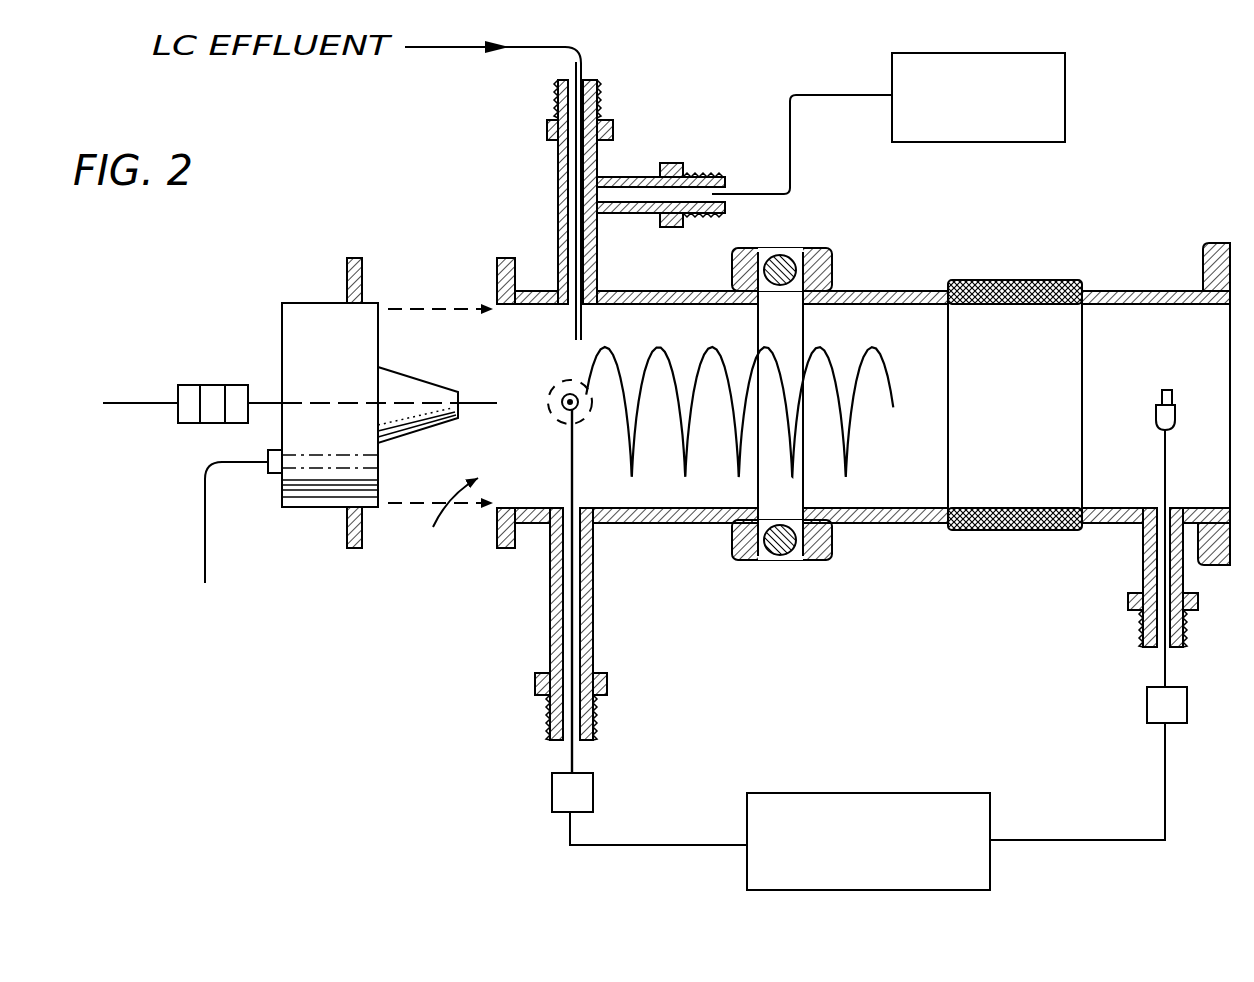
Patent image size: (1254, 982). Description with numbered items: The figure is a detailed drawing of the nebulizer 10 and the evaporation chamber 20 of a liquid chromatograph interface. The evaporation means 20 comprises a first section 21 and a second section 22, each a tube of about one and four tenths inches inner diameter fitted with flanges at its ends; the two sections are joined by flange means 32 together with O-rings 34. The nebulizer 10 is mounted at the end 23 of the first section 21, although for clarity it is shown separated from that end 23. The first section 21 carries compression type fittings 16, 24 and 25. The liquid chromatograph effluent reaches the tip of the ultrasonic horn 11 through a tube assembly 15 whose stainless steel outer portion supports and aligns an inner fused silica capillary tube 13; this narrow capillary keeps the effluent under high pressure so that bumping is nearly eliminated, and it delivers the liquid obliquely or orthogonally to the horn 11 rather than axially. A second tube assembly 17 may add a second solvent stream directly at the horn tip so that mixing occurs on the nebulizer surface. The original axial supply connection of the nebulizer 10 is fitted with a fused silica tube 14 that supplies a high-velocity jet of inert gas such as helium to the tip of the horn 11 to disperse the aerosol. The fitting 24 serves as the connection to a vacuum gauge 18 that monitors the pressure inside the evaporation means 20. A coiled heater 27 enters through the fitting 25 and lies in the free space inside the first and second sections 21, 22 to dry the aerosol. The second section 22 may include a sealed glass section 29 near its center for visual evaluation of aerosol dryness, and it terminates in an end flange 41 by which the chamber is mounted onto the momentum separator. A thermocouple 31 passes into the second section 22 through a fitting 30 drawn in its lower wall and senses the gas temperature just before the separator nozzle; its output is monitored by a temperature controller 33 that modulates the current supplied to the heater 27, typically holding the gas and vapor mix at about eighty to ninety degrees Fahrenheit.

The nebulizer 10 is at (413, 250).
The horn 11 is at (425, 381).
The capillary tube 13 is at (583, 327).
The tube 14 is at (128, 403).
The tube assembly 15 is at (642, 85).
The compression type fitting 16 is at (613, 128).
The second tube assembly 17 is at (541, 392).
The vacuum gauge 18 is at (1065, 97).
The evaporation chamber 20 is at (1080, 203).
The first section 21 is at (652, 291).
The second section 22 is at (895, 291).
The end 23 is at (445, 521).
The compression type fitting 24 is at (672, 163).
The compression type fitting 25 is at (602, 683).
The heater 27 is at (570, 477).
The sealed glass section 29 is at (1042, 280).
The sensor feedthrough fitting 30 is at (1128, 605).
The thermocouple 31 is at (1182, 405).
The flange means 32 is at (833, 258).
The temperature controller 33 is at (905, 793).
The O-rings 34 is at (788, 247).
The end flange 41 is at (1203, 253).